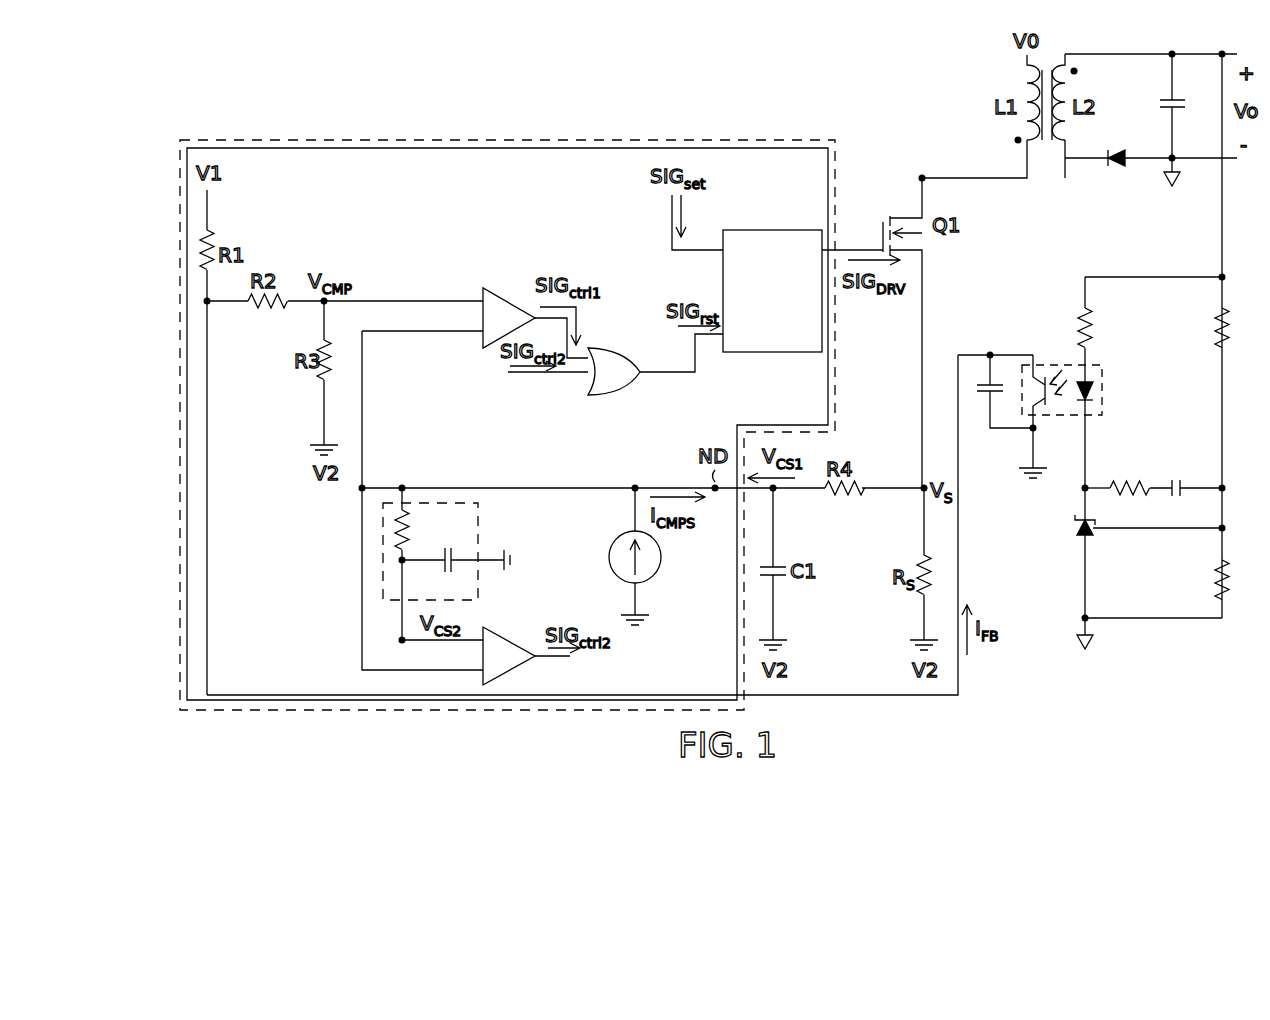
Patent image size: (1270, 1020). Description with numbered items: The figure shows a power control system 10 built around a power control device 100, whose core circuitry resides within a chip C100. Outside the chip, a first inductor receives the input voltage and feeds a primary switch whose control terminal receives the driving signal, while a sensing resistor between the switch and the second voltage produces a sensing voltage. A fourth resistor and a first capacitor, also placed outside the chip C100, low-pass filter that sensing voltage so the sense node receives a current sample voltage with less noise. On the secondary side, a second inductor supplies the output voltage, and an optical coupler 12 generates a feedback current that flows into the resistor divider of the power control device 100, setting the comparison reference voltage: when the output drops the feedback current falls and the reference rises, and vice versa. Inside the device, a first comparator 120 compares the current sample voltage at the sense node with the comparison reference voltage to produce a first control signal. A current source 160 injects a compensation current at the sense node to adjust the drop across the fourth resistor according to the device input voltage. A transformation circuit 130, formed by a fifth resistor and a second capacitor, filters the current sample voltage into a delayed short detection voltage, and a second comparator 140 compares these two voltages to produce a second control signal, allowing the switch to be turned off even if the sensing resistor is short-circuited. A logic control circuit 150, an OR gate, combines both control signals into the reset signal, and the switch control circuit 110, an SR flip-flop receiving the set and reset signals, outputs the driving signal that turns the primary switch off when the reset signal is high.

The power control system 10 is at (293, 92).
The power control device 100 is at (698, 140).
The chip C100 is at (795, 140).
The switch control circuit 110 is at (738, 230).
The first comparator 120 is at (512, 295).
The transformation circuit 130 is at (478, 510).
The second comparator 140 is at (499, 639).
The logic control circuit 150 is at (616, 388).
The current source 160 is at (650, 583).
The optical coupler 12 is at (1100, 375).